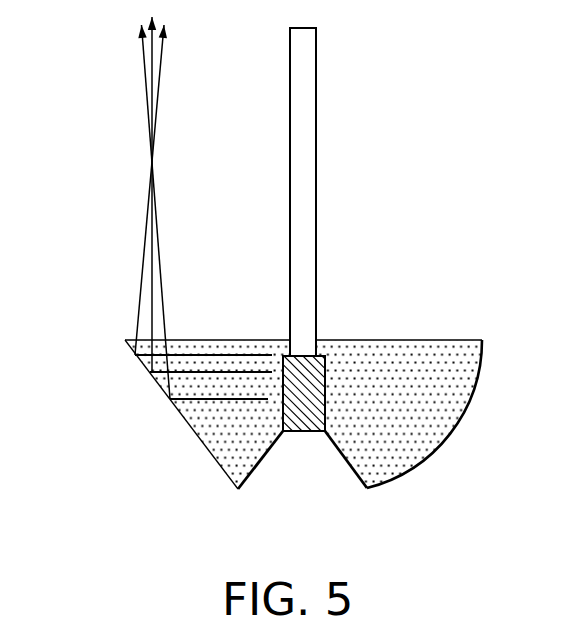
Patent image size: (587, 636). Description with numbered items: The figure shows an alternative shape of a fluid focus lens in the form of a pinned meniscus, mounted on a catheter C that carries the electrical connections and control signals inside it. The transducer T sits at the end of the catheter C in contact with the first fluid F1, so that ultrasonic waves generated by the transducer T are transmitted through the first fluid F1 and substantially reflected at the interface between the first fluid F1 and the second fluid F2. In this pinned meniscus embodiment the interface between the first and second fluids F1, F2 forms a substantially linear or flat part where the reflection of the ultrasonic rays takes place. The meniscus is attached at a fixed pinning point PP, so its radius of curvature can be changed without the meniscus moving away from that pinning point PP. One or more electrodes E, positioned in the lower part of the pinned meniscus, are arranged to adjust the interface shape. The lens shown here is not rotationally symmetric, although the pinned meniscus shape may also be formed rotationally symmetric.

The catheter C is at (311, 190).
The transducer T is at (323, 356).
The first fluid F1 is at (413, 352).
The second fluid F2 is at (424, 414).
The electrode E is at (259, 469).
The pinning point PP is at (121, 343).